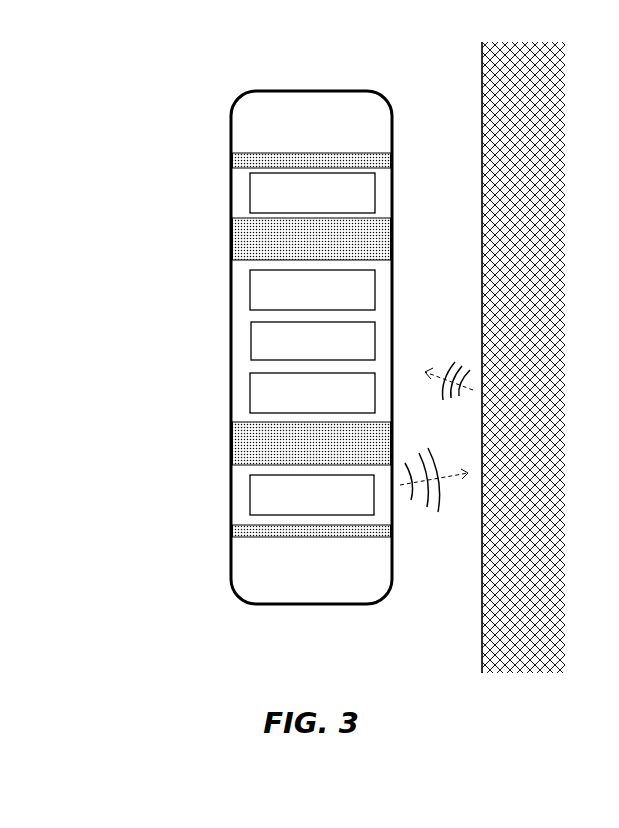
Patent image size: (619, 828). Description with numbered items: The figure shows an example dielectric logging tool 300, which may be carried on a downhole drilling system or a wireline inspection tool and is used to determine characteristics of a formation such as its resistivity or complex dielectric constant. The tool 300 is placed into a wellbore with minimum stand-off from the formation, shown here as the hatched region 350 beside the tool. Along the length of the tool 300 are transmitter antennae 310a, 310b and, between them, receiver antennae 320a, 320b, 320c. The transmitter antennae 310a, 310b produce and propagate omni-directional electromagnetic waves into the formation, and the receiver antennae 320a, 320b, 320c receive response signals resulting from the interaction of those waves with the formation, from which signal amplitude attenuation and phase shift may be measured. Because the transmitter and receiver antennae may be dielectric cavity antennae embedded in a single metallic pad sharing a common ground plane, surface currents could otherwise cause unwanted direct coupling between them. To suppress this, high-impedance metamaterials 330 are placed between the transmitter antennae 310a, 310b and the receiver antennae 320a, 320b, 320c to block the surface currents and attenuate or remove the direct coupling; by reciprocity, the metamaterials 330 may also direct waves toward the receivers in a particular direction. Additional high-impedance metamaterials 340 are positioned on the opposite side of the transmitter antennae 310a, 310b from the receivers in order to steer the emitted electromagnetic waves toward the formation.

The dielectric logging tool 300 is at (249, 89).
The transmitter antenna 310a is at (312, 193).
The transmitter antenna 310b is at (312, 495).
The receiver antenna 320a is at (312, 290).
The receiver antenna 320b is at (313, 341).
The receiver antenna 320c is at (312, 393).
The high-impedance metamaterials 330 is at (229, 450).
The high-impedance metamaterials 340 is at (230, 528).
The wall / target object 350 is at (504, 342).